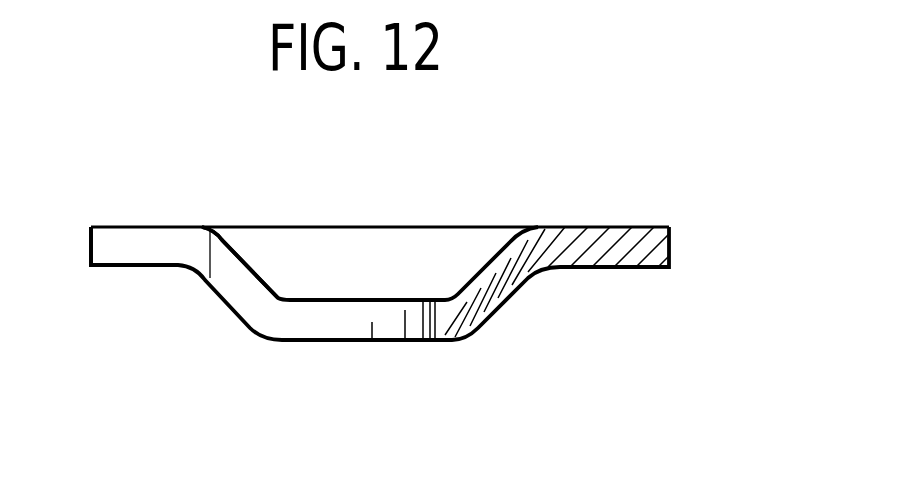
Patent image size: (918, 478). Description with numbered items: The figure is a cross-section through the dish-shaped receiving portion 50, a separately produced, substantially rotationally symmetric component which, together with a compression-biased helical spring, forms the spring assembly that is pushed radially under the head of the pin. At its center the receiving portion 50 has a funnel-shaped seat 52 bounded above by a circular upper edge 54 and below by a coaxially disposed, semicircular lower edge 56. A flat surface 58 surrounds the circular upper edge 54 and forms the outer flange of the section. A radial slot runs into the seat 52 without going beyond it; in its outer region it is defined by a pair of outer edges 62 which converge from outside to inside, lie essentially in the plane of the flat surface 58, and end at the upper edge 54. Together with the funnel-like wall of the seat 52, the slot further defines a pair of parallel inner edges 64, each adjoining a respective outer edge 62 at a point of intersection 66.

The receiving portion 50 is at (604, 204).
The funnel-shaped seat 52 is at (492, 248).
The circular upper edge 54 is at (534, 227).
The semicircular lower edge 56 is at (443, 340).
The flat surface 58 is at (643, 222).
The outer edges 62 is at (136, 249).
The inner edges 64 is at (240, 278).
The point of intersection 66 is at (208, 250).